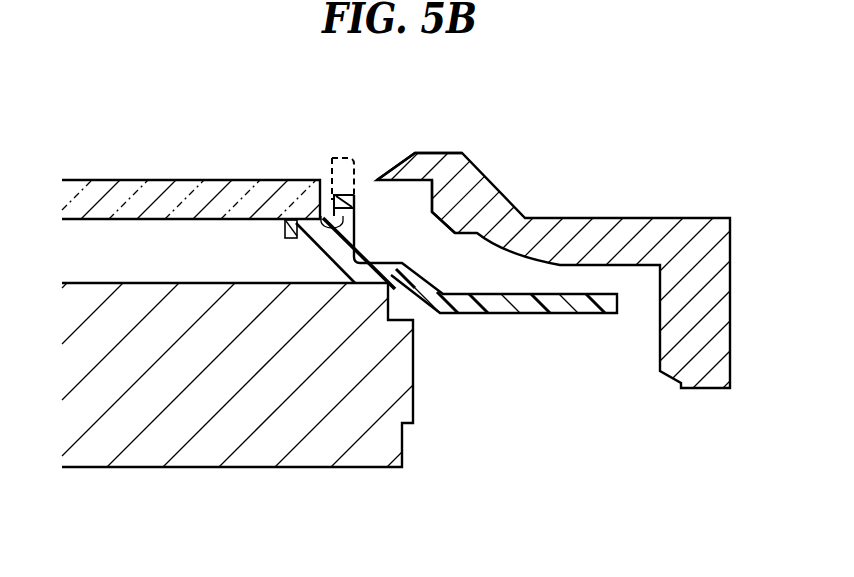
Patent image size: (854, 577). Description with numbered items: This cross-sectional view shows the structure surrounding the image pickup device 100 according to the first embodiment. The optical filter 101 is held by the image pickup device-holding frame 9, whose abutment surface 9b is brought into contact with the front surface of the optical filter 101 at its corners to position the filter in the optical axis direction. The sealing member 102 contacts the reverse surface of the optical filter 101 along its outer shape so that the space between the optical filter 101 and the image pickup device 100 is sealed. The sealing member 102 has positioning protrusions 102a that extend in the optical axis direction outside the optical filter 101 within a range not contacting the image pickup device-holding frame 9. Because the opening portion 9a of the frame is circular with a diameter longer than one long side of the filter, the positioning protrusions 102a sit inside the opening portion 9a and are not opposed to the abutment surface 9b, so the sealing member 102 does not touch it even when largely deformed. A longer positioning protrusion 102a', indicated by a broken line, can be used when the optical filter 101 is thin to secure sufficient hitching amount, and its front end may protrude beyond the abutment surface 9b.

The image pickup device-holding frame 9 is at (633, 238).
The opening portion 9a is at (379, 177).
The abutment surface 9b is at (404, 183).
The image pickup device 100 is at (231, 418).
The optical filter 101 is at (148, 200).
The sealing member 102 is at (540, 316).
The positioning protrusion 102a is at (363, 162).
The positioning protrusion 102a' is at (311, 141).